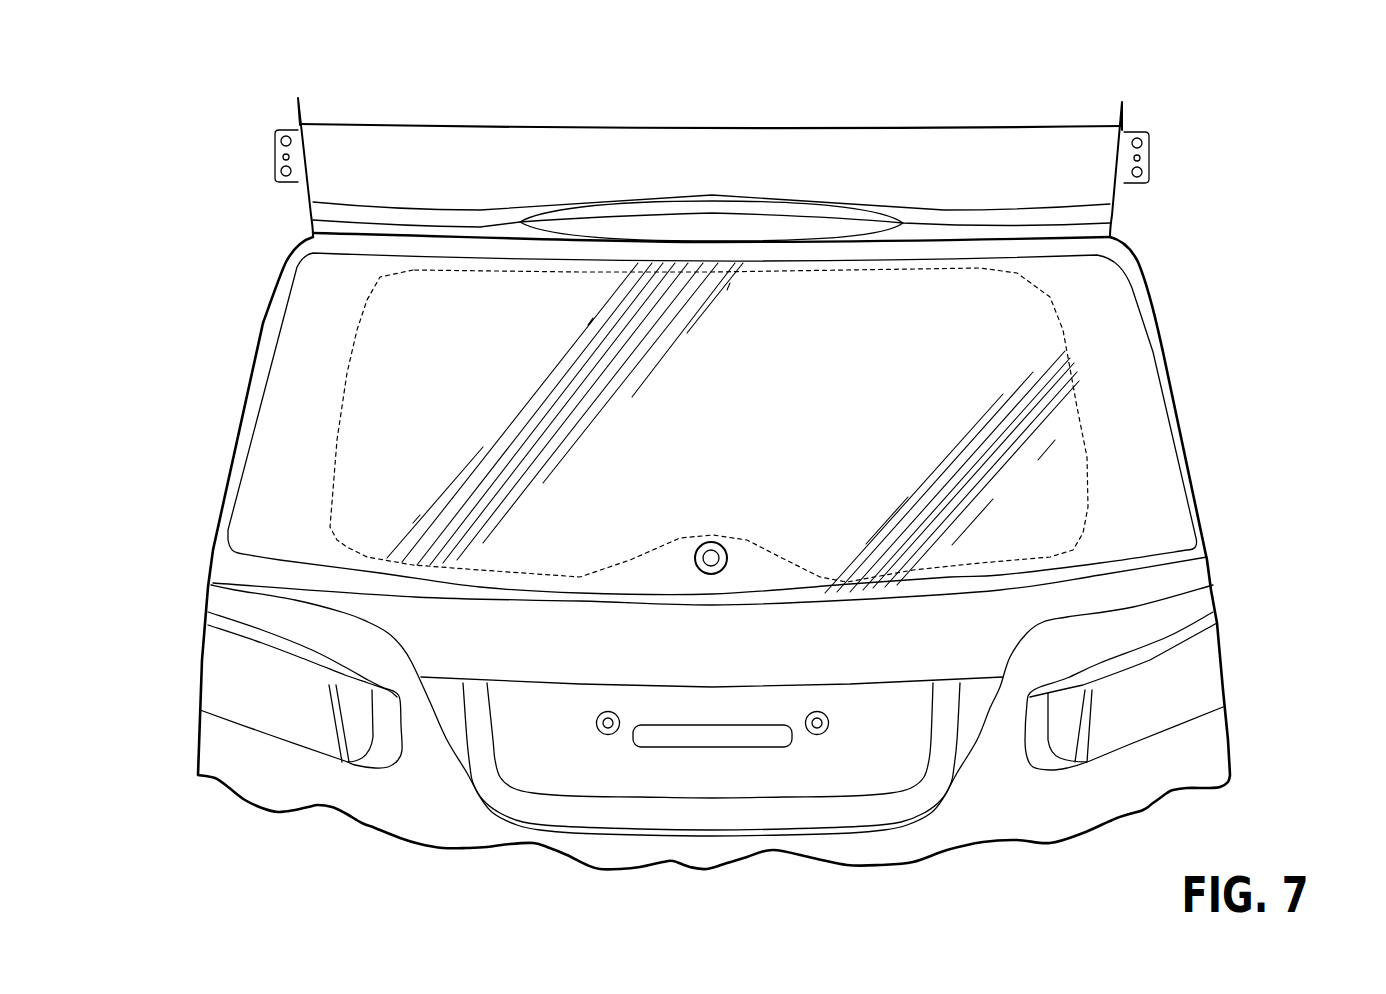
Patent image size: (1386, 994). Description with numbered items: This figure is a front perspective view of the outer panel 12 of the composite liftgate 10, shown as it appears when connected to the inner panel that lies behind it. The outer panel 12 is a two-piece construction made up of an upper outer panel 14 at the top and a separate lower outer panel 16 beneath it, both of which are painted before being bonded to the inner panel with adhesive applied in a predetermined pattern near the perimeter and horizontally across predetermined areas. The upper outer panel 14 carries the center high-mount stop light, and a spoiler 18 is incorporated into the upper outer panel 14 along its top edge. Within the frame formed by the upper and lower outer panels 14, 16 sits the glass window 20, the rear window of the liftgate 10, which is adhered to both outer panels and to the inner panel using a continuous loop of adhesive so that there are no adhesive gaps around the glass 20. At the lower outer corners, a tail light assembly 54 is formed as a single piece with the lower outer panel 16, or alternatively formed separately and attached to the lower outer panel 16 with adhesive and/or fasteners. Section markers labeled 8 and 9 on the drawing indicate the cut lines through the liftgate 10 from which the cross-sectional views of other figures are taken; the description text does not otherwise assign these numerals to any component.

The composite liftgate system 10 is at (155, 145).
The outer panel 12 is at (707, 116).
The upper outer panel 14 is at (1144, 213).
The lower outer panel 16 is at (1256, 599).
The spoiler 18 is at (1033, 223).
The glass window 20 is at (1130, 374).
The tail light assembly 54 is at (1252, 684).
The section line for FIG. 8 is at (254, 327).
The section line for FIG. 9 is at (216, 481).